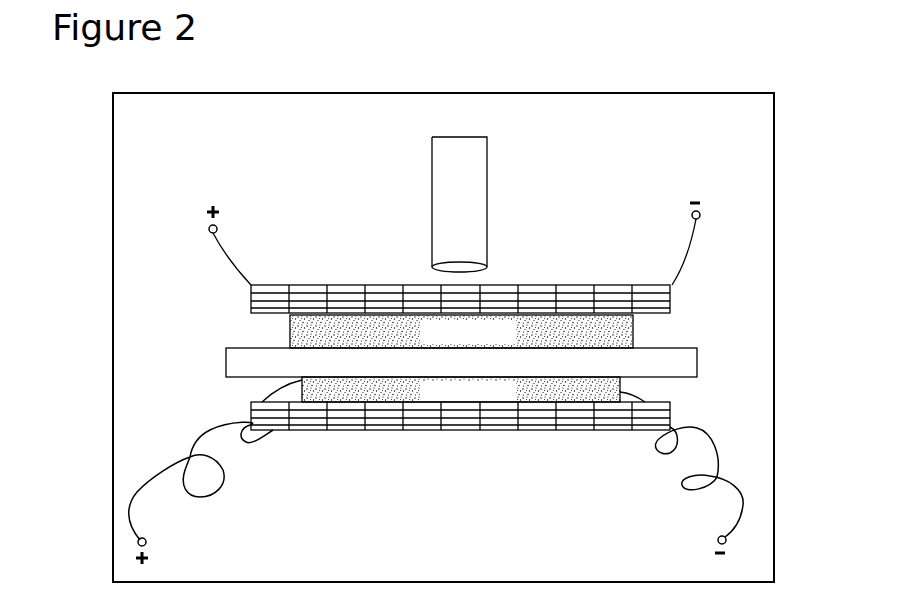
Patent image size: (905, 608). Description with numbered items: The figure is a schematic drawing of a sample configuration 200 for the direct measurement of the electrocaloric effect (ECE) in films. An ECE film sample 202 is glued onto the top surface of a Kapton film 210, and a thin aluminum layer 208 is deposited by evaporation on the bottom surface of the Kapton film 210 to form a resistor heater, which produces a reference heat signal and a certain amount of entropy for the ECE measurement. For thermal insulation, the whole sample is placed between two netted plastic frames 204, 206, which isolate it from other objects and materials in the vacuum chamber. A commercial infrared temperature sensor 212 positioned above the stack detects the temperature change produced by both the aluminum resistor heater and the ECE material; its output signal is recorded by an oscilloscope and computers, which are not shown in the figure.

The sample configuration 200 is at (874, 133).
The ECE film sample 202 is at (633, 330).
The netted plastic frame 204 is at (672, 300).
The netted plastic frame 206 is at (670, 408).
The aluminum layer 208 is at (620, 384).
The Kapton film 210 is at (226, 358).
The infrared temperature sensor 212 is at (430, 148).